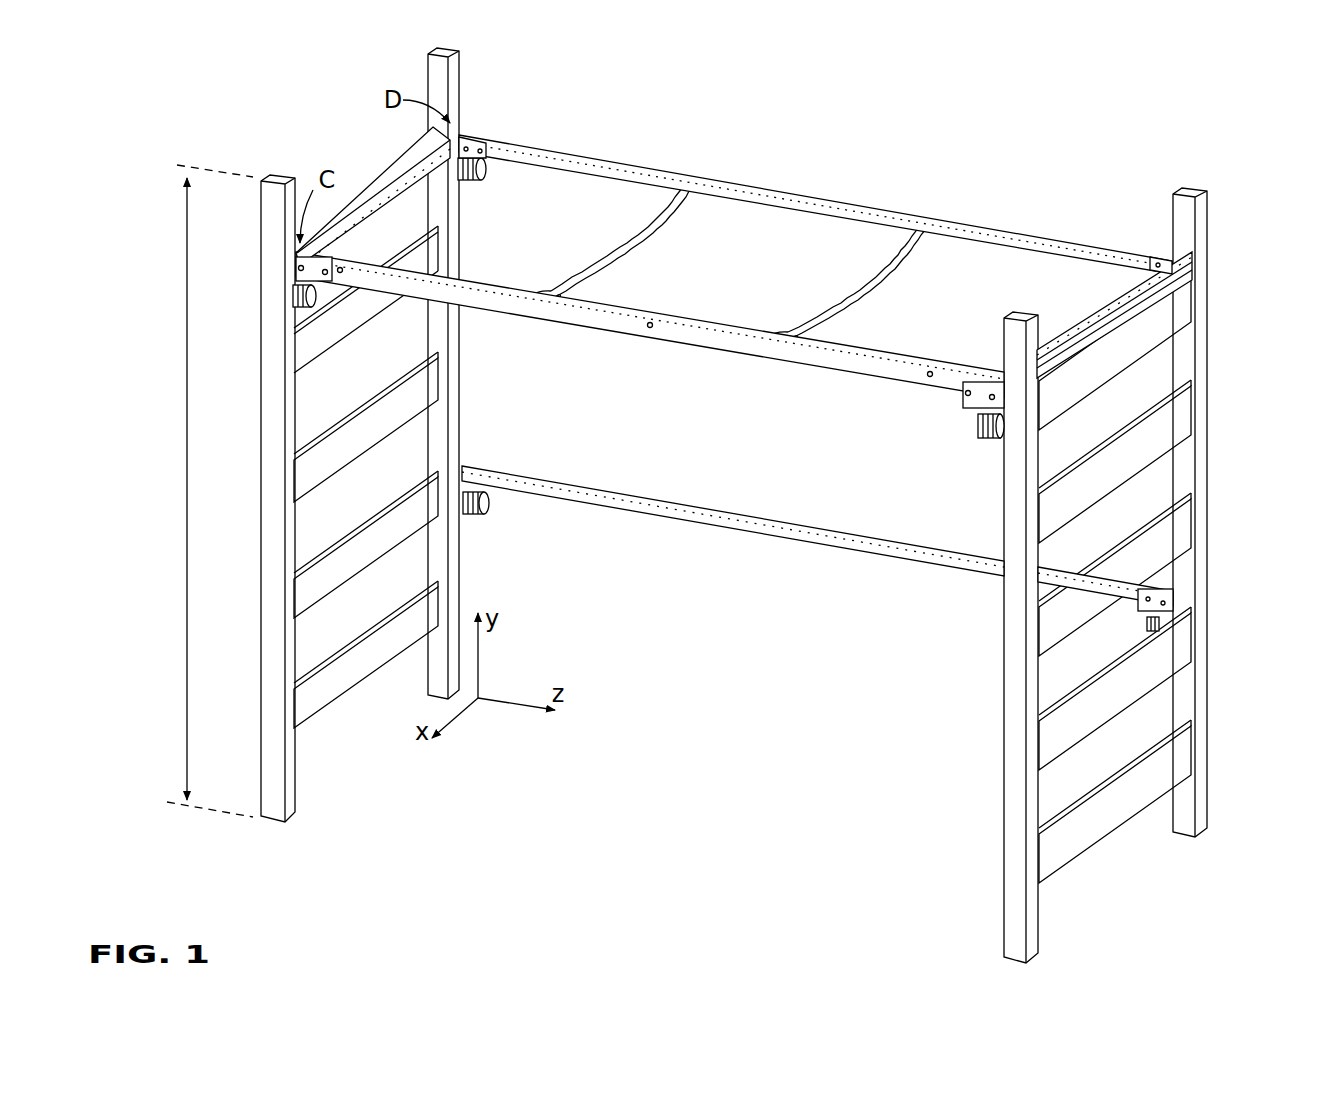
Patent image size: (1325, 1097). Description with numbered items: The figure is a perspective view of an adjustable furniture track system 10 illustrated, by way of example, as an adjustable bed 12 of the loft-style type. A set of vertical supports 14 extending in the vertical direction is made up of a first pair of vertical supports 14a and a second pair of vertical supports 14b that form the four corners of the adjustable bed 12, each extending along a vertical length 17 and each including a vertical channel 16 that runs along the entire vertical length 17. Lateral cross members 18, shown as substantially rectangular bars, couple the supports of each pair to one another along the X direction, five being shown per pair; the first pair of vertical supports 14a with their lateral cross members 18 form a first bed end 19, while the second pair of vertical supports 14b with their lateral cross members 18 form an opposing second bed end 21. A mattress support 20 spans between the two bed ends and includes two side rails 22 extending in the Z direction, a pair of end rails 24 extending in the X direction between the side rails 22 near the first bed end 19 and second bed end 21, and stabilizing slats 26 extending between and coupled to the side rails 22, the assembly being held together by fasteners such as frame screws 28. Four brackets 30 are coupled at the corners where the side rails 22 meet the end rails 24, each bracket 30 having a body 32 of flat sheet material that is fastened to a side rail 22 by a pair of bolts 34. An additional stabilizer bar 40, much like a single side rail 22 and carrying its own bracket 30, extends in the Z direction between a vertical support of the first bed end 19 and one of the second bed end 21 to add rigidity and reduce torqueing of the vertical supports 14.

The adjustable furniture track system 10 is at (716, 500).
The adjustable bed 12 is at (716, 500).
The set of vertical supports 14 is at (753, 500).
The first pair of vertical supports 14a is at (437, 48).
The second pair of vertical supports 14b is at (1207, 210).
The vertical channel 16 is at (753, 500).
The vertical length 17 is at (187, 572).
The lateral cross members 18 is at (362, 667).
The first bed end 19 is at (467, 107).
The mattress support 20 is at (738, 340).
The second bed end 21 is at (1163, 250).
The side rails 22 is at (798, 205).
The end rails 24 is at (373, 212).
The stabilizing slats 26 is at (627, 243).
The frame screws 28 is at (483, 137).
The bracket 30 is at (498, 170).
The body 32 is at (287, 277).
The bolts 34 is at (990, 397).
The stabilizer bar 40 is at (605, 490).